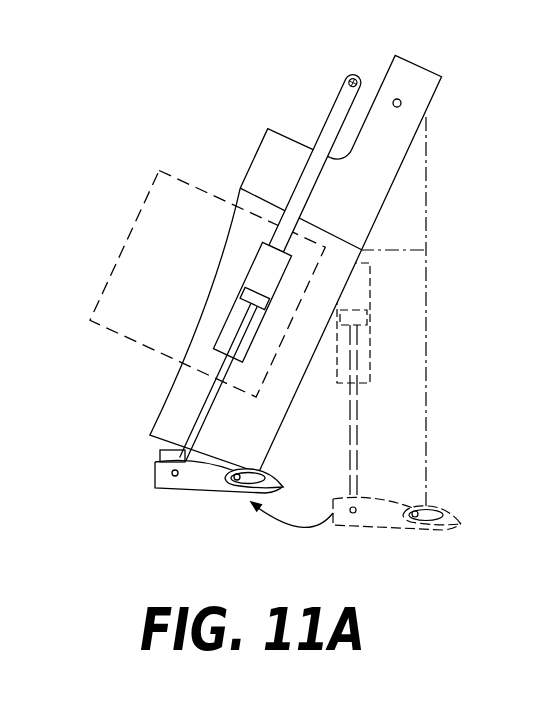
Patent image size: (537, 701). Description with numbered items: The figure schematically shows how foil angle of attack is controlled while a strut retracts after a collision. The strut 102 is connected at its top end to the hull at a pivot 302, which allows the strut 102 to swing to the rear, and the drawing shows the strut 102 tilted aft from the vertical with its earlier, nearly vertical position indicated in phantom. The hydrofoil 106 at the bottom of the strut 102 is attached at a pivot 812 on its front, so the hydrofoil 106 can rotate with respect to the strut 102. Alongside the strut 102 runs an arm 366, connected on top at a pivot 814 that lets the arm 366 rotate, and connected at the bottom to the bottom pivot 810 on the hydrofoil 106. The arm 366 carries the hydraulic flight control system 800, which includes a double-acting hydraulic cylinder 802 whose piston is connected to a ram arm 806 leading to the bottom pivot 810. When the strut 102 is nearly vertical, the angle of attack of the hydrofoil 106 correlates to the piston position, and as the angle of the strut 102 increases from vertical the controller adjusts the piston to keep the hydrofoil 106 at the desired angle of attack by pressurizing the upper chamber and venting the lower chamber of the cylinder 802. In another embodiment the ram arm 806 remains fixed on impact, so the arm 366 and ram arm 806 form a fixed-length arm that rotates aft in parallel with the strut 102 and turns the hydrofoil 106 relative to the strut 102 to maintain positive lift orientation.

The strut 102 is at (277, 377).
The hydrofoil 106 is at (202, 484).
The pivot 302 is at (401, 101).
The arm 366 is at (342, 87).
The hydraulic flight control system 800 is at (140, 206).
The double-acting hydraulic cylinder 802 is at (255, 258).
The ram arm 806 is at (198, 402).
The bottom pivot 810 is at (172, 478).
The pivot 812 is at (240, 488).
The pivot 814 is at (349, 78).